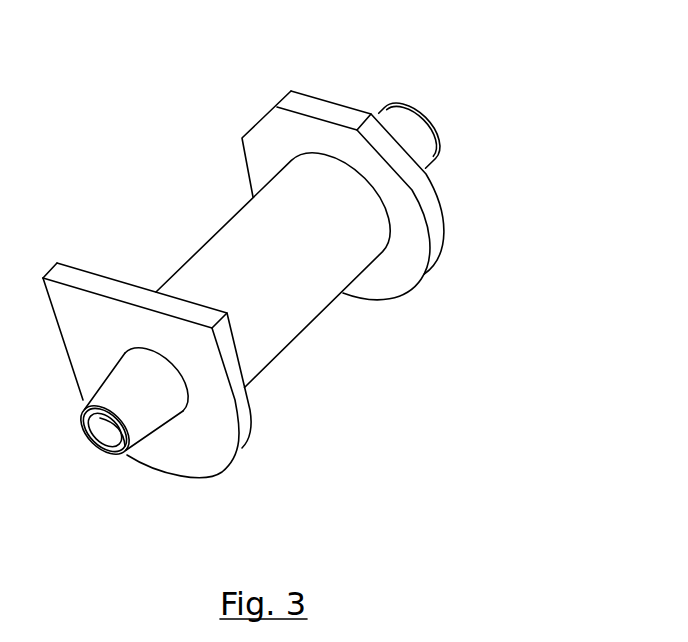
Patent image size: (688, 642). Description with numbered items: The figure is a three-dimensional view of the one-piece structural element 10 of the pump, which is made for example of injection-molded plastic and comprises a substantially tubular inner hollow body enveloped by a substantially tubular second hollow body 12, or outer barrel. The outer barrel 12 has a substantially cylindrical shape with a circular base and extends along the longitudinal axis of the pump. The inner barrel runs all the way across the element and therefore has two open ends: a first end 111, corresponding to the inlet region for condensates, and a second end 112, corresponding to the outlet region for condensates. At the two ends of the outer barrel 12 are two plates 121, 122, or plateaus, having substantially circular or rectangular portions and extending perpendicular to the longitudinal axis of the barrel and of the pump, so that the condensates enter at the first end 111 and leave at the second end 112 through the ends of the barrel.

The structural element 10 is at (236, 104).
The second hollow body 12 is at (232, 236).
The first end 111 is at (428, 158).
The second end 112 is at (155, 419).
The plate 121 is at (440, 243).
The plate 122 is at (252, 437).